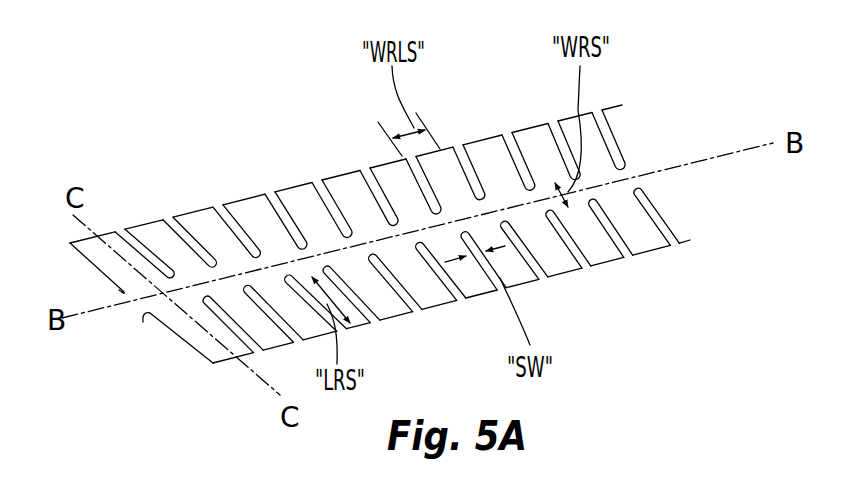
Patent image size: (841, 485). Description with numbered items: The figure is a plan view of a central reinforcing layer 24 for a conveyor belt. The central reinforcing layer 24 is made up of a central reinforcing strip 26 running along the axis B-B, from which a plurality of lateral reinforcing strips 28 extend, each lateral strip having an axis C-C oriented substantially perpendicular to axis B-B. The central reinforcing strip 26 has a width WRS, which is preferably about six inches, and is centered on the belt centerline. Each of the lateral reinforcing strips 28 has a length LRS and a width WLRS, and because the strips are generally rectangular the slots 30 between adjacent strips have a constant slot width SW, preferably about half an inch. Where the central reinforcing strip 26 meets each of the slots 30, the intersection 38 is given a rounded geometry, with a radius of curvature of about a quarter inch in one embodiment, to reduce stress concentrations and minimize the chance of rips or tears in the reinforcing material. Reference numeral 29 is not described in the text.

The central reinforcing layer 24 is at (668, 200).
The central reinforcing strip 26 is at (619, 177).
The lateral reinforcing strips 28 is at (293, 205).
The slot 29 is at (372, 268).
The slots 30 is at (542, 130).
The intersection 38 is at (556, 221).